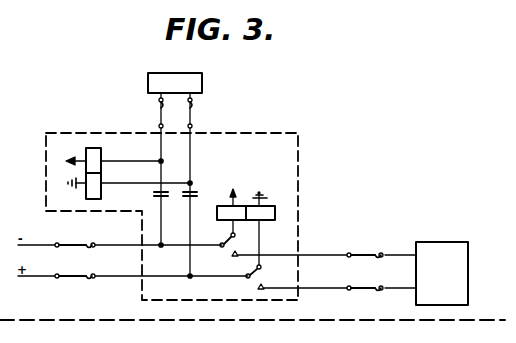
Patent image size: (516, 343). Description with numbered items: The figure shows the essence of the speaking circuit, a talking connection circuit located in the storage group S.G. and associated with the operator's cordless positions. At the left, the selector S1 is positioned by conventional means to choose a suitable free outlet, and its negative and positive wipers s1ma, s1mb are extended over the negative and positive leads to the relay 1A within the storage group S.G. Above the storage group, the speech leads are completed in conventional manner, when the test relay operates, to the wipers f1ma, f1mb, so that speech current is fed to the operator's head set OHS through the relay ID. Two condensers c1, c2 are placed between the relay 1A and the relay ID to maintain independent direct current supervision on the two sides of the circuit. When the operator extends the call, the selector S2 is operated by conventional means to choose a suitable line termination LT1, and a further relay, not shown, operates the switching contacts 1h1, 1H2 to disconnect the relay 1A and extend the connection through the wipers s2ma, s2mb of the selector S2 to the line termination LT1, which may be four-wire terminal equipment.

The storage group S.G. is at (172, 216).
The operator's head set OHS is at (175, 83).
The wiper f1ma is at (141, 113).
The wiper f1mb is at (210, 113).
The relay 1D ID is at (125, 170).
The condenser c1 is at (151, 198).
The condenser c2 is at (198, 198).
The relay 1A is at (251, 204).
The switching contact 1h1 is at (223, 238).
The switching contact 1H2 is at (270, 254).
The selector S1 is at (75, 262).
The negative wiper s1ma is at (75, 238).
The positive wiper s1mb is at (75, 284).
The selector S2 is at (364, 273).
The wiper s2ma is at (364, 249).
The wiper s2mb is at (364, 296).
The line termination LT1 is at (442, 273).